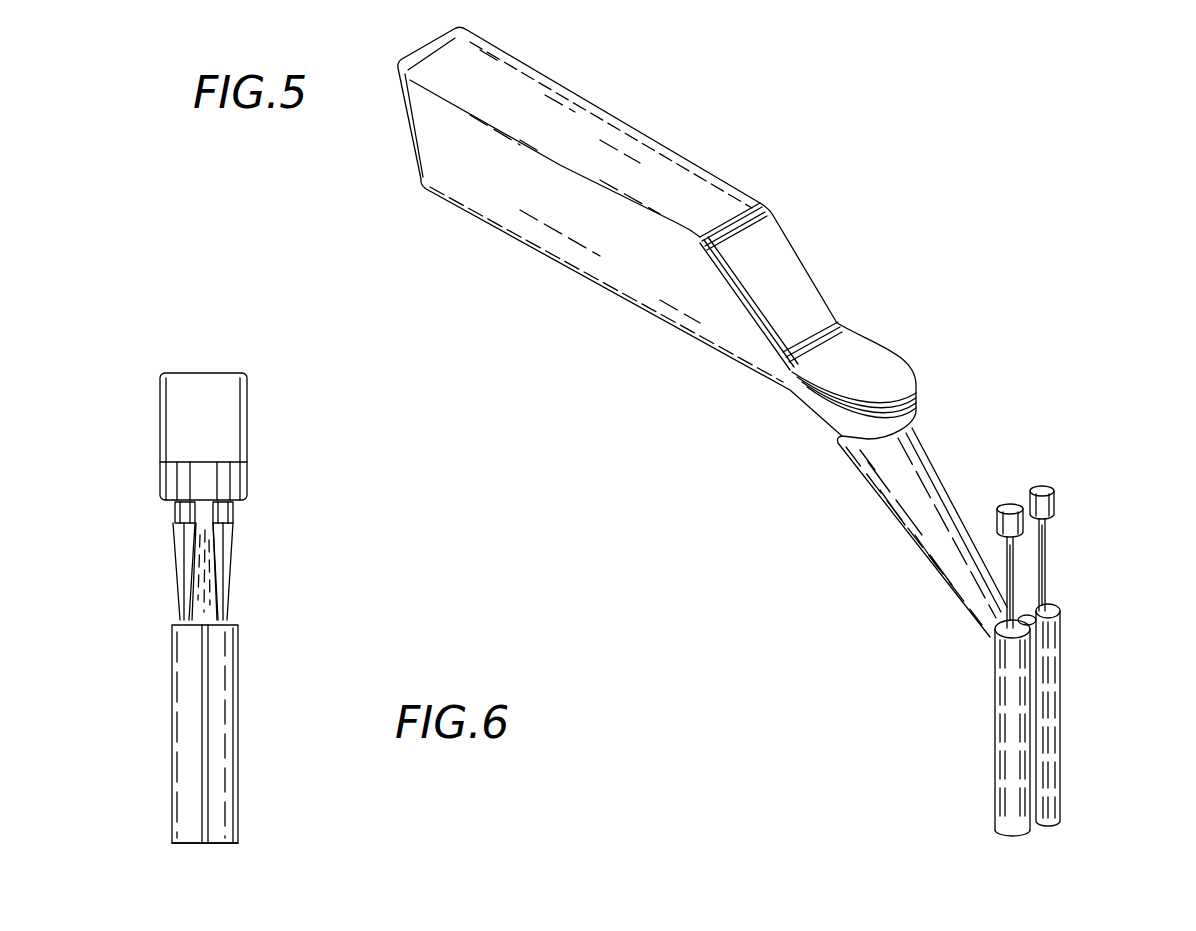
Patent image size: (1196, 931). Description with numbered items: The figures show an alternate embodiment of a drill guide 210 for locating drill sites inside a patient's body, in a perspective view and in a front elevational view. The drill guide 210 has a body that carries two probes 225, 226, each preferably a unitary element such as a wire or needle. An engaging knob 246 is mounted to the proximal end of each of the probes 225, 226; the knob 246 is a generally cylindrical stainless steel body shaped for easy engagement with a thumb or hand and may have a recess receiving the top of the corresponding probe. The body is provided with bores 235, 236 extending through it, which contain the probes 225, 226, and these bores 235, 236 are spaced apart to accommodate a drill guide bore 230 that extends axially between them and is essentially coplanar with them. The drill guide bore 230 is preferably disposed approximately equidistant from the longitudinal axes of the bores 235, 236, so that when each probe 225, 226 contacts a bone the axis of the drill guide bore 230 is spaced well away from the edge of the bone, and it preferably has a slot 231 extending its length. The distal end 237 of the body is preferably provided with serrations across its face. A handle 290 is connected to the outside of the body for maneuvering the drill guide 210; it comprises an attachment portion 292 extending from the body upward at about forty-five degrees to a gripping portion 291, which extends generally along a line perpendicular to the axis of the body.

In FIG. 5, the drill guide 210 is at (908, 258).
In FIG. 6, the drill guide 210 is at (343, 592).
In FIG. 5, the handle 290 is at (818, 447).
In FIG. 6, the handle 290 is at (300, 500).
In FIG. 5, the gripping portion 291 is at (677, 152).
In FIG. 6, the gripping portion 291 is at (247, 415).
In FIG. 5, the attachment portion 292 is at (933, 455).
In FIG. 6, the attachment portion 292 is at (237, 542).
In FIG. 5, the engaging knob 246 is at (1010, 507).
In FIG. 6, the engaging knob 246 is at (185, 497).
In FIG. 5, the probe 226 is at (1003, 610).
In FIG. 6, the probe 226 is at (183, 560).
In FIG. 5, the probe 225 is at (1045, 553).
In FIG. 6, the probe 225 is at (237, 572).
In FIG. 5, the drill guide bore 230 is at (1060, 627).
In FIG. 6, the drill guide bore 230 is at (203, 667).
In FIG. 6, the slot 231 is at (207, 695).
In FIG. 6, the bore 235 is at (197, 793).
In FIG. 6, the bore 236 is at (218, 777).
In FIG. 5, the distal end 237 is at (1037, 837).
In FIG. 6, the distal end 237 is at (217, 848).